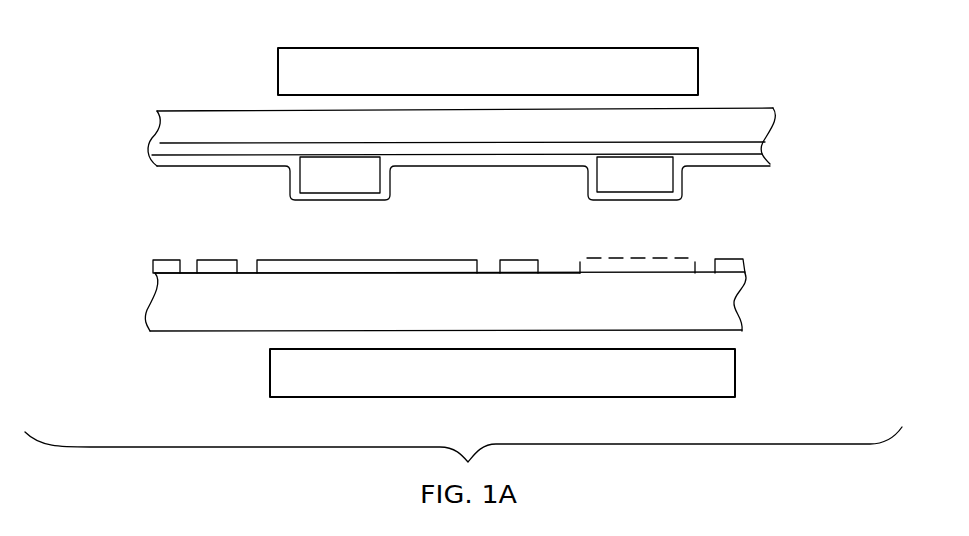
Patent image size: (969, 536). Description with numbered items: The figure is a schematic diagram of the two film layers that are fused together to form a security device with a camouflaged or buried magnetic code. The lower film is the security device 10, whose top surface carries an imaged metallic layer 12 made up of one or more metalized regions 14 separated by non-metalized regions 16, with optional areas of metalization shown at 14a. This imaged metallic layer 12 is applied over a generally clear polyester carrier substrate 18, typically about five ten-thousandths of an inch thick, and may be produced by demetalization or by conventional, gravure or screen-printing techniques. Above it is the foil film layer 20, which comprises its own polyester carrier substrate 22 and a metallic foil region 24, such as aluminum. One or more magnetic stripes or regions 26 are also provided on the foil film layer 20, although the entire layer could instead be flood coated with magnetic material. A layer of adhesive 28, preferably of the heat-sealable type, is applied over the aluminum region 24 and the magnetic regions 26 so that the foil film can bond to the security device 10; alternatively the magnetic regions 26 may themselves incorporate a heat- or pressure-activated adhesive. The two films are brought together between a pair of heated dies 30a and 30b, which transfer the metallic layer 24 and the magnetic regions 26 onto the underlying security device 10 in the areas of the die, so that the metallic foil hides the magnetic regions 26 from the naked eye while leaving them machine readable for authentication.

The security device 10 is at (451, 256).
The imaged metallic layer 12 is at (437, 256).
The metalized regions 14 is at (158, 260).
The optional areas of metalization 14a is at (662, 257).
The non-metalized regions 16 is at (188, 262).
The polyester carrier substrate 18 is at (148, 312).
The foil film layer 20 is at (468, 148).
The polyester carrier substrate 22 is at (160, 122).
The metallic foil region 24 is at (155, 152).
The magnetic regions 26 is at (383, 196).
The adhesive layer 28 is at (157, 164).
The heated die 30a is at (583, 79).
The heated die 30b is at (622, 380).